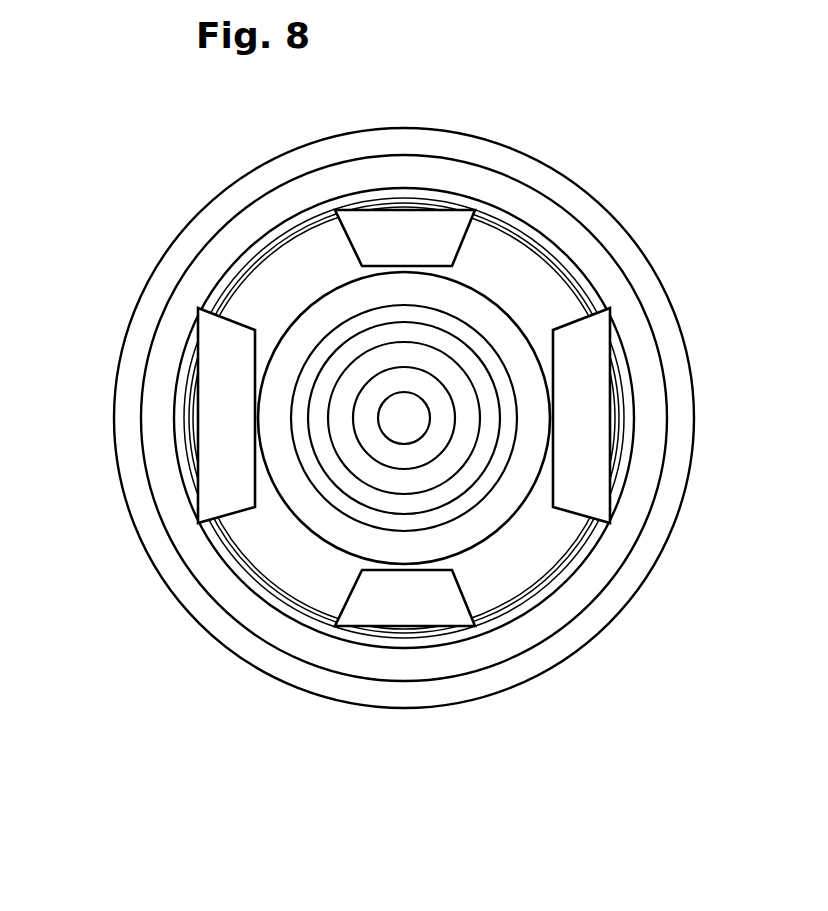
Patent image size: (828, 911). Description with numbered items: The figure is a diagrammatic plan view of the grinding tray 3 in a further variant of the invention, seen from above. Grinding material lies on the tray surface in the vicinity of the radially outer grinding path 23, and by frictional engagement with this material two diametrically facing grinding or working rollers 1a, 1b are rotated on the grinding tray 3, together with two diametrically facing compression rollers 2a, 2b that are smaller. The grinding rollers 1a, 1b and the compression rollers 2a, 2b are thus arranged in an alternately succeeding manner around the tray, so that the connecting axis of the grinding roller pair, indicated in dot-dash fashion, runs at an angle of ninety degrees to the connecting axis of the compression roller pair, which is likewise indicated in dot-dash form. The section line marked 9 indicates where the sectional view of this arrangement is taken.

The grinding roller 1a is at (212, 468).
The grinding roller 1b is at (600, 370).
The compression roller 2a is at (355, 612).
The compression roller 2b is at (378, 222).
The grinding tray 3 is at (530, 558).
The radially outer grinding path 23 is at (540, 263).
The section line 9- 9 is at (55, 508).